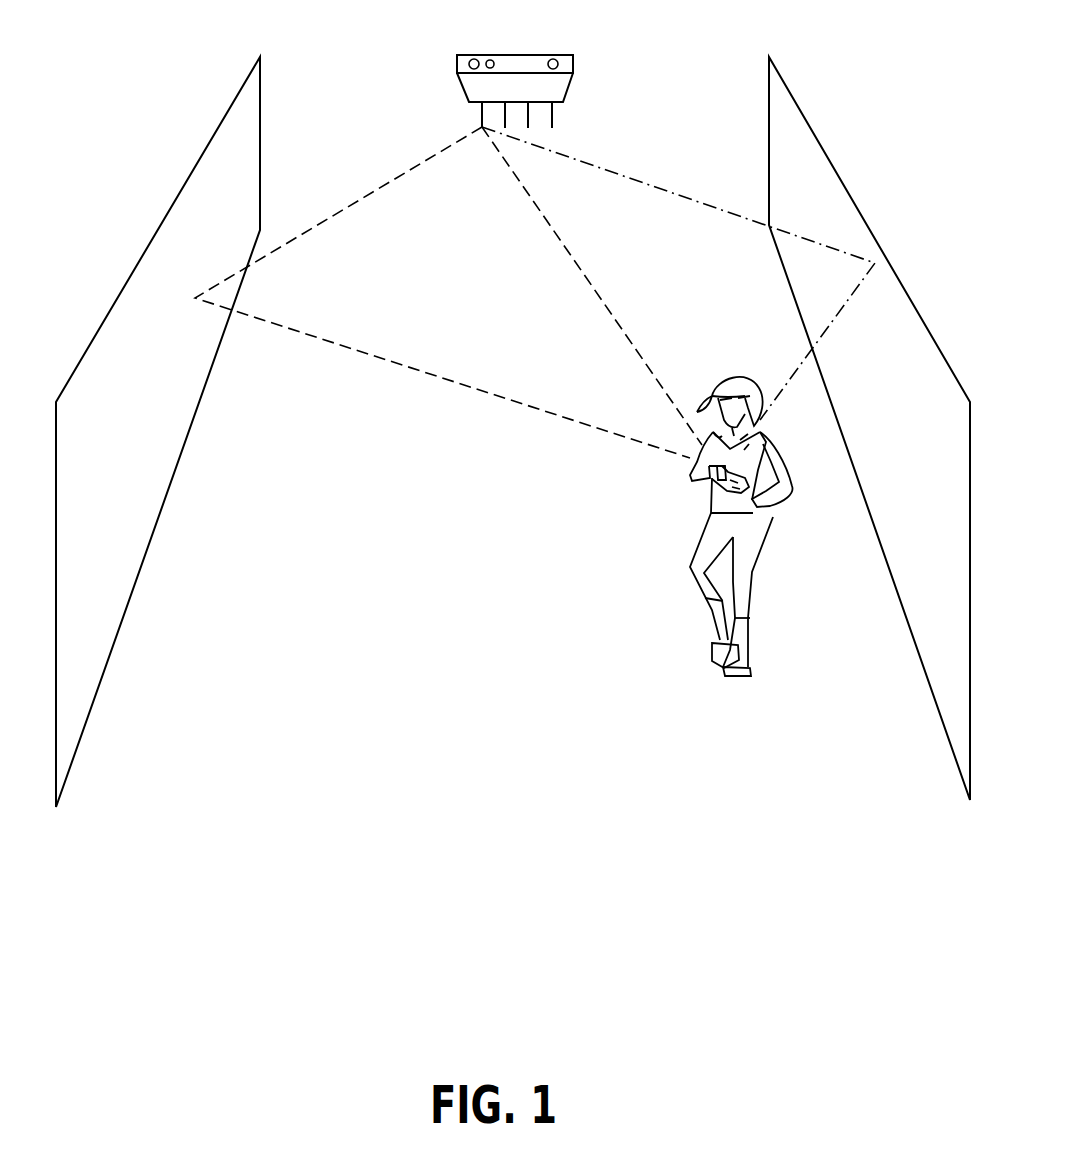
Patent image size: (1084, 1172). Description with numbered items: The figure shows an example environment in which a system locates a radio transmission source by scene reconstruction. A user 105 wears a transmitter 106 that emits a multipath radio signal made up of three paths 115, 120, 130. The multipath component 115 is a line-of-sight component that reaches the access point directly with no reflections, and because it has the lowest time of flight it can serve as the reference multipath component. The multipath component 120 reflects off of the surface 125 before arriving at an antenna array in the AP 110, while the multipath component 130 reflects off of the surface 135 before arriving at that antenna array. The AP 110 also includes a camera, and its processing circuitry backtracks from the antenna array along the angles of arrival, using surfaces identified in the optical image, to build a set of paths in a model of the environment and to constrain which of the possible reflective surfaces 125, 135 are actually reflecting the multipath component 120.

The user 105 is at (690, 577).
The transmitter 106 is at (713, 492).
The AP 110 is at (457, 56).
The multipath component 115 is at (577, 262).
The multipath component 120 is at (302, 333).
The surface 125 is at (140, 262).
The multipath component 130 is at (623, 175).
The surface 135 is at (857, 205).